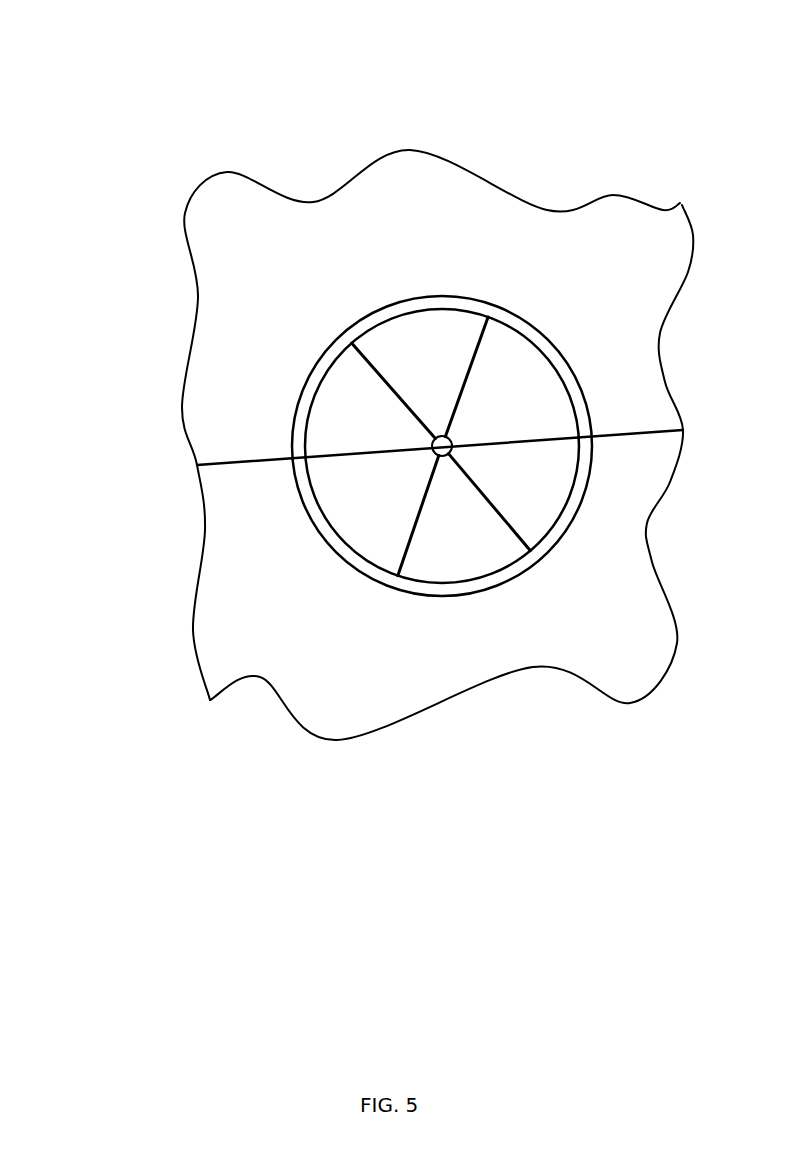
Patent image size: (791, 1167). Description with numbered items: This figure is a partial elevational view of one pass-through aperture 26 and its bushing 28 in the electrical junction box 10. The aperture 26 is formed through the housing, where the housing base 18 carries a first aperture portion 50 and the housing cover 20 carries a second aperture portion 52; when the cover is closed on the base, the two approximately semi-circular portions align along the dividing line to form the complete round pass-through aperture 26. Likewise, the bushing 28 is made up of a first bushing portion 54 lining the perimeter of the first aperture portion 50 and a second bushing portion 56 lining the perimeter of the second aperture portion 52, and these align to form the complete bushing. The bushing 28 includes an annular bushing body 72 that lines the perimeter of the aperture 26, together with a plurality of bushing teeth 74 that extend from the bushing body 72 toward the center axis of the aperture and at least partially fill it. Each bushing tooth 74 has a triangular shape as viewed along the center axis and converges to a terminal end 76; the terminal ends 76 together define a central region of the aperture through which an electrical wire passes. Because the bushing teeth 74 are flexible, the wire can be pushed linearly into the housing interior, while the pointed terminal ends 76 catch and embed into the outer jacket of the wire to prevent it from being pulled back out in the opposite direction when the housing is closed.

The electrical junction box 10 is at (164, 140).
The housing base 18 is at (628, 660).
The housing cover 20 is at (607, 228).
The pass-through aperture 26 is at (517, 300).
The bushing 28 is at (452, 284).
The first aperture portion 50 is at (565, 355).
The second aperture portion 52 is at (290, 472).
The first bushing portion 54 is at (562, 370).
The second bushing portion 56 is at (312, 500).
The bushing body 72 is at (327, 350).
The bushing teeth 74 is at (420, 342).
The terminal end 76 is at (439, 438).